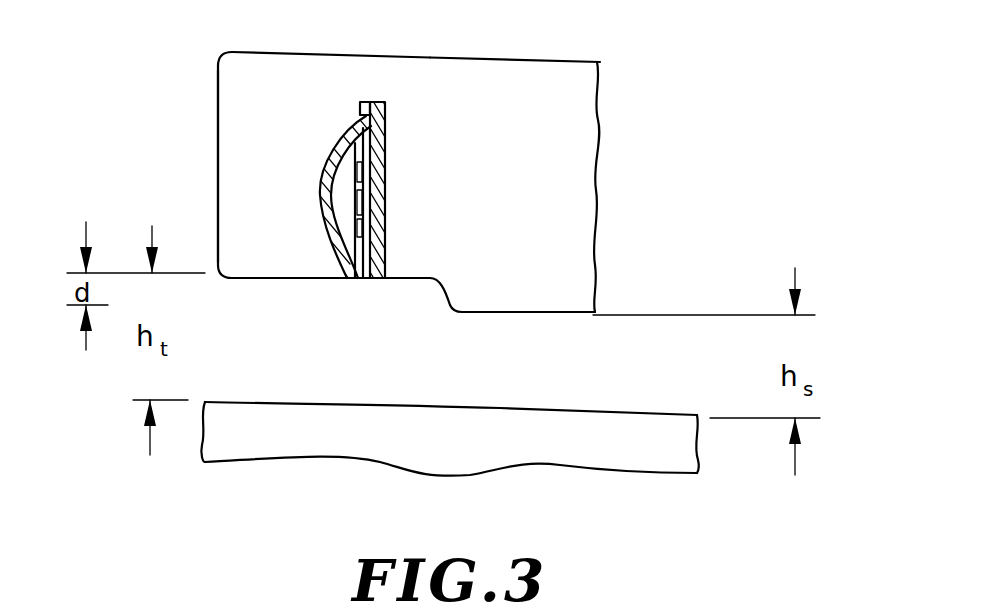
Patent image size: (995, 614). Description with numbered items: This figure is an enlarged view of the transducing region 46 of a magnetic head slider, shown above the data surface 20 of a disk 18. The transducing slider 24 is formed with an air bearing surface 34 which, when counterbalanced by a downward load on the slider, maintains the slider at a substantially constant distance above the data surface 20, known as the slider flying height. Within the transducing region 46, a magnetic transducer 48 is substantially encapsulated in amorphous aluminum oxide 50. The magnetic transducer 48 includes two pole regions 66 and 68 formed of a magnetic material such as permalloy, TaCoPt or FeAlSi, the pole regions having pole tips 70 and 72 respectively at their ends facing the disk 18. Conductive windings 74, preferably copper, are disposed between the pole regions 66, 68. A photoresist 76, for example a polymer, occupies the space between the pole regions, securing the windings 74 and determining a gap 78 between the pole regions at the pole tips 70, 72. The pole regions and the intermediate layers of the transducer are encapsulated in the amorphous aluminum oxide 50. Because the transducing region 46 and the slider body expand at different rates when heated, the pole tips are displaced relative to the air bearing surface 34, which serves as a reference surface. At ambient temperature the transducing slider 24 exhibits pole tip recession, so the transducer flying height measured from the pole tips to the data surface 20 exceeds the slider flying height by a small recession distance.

The disk 18 is at (660, 455).
The data surface 20 is at (647, 415).
The transducing slider 24 is at (548, 60).
The air bearing surface 34 is at (535, 312).
The transducing region 46 is at (248, 87).
The magnetic transducer 48 is at (366, 100).
The amorphous aluminum oxide 50 is at (293, 75).
The pole region 66 is at (377, 218).
The pole region 68 is at (328, 233).
The pole tip 70 is at (353, 279).
The pole tip 72 is at (377, 279).
The conductive windings 74 is at (363, 175).
The photoresist 76 is at (343, 177).
The gap 78 is at (363, 279).